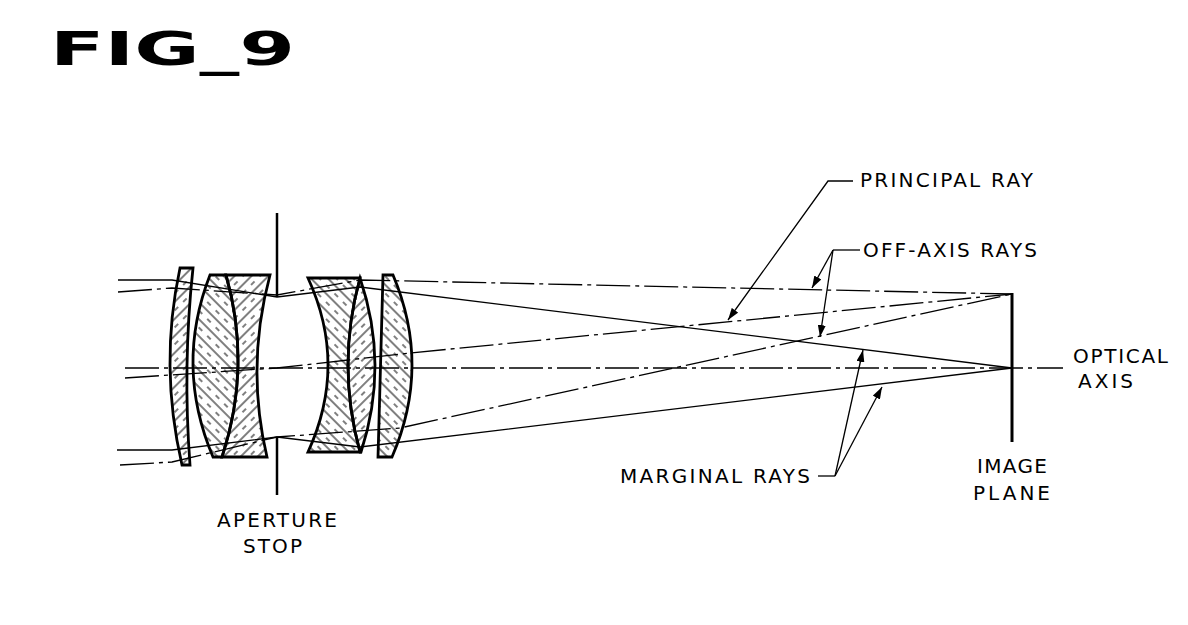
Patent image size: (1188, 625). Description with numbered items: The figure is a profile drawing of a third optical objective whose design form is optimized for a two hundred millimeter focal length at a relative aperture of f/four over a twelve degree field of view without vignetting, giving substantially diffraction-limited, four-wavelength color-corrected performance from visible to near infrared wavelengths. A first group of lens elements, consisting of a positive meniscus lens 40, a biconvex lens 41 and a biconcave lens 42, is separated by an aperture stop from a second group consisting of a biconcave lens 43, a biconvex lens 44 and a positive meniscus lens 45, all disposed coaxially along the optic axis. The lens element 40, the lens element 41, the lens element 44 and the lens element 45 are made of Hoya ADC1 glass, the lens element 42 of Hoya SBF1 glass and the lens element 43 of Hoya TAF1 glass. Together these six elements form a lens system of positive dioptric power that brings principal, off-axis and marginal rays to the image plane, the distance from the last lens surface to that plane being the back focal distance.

The positive meniscus lens 40 is at (187, 267).
The biconvex lens 41 is at (221, 274).
The biconcave lens 42 is at (243, 274).
The biconcave lens 43 is at (338, 278).
The biconvex lens 44 is at (361, 278).
The positive meniscus lens 45 is at (388, 275).